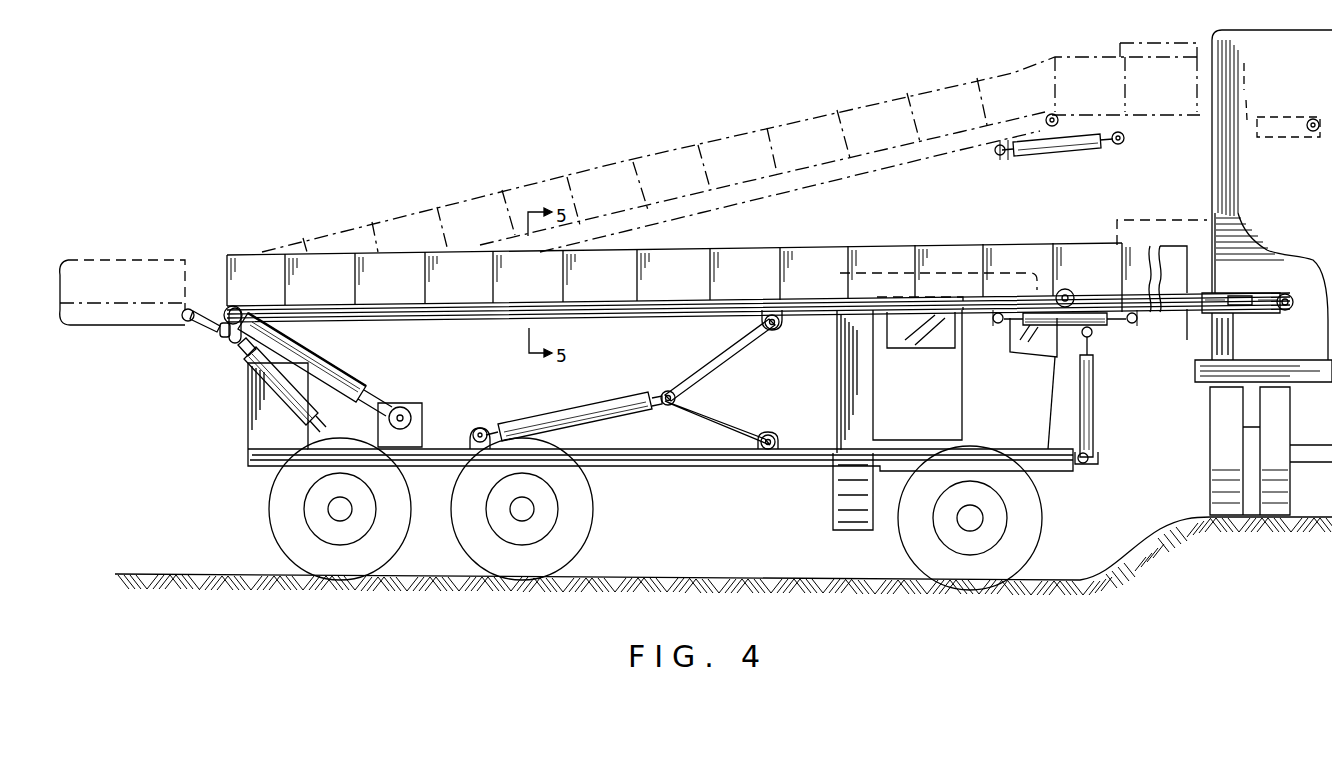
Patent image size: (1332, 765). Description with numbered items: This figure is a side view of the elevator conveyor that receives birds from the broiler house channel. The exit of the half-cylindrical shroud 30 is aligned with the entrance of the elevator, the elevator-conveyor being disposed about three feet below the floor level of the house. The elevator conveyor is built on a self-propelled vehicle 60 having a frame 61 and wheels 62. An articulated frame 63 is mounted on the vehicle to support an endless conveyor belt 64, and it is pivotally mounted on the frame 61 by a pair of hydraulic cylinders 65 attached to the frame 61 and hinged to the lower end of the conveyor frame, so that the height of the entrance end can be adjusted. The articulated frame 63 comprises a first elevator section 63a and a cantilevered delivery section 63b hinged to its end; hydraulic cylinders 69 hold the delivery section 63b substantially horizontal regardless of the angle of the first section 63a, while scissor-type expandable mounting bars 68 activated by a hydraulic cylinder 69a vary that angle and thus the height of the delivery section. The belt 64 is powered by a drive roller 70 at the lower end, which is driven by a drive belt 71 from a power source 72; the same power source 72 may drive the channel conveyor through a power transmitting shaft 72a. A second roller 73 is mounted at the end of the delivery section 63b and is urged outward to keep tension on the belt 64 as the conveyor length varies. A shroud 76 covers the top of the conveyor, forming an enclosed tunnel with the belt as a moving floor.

The half-cylindrical shroud 30 is at (157, 262).
The self-propelled vehicle 60 is at (660, 420).
The frame 61 is at (765, 466).
The wheels 62 is at (399, 549).
The articulated frame 63 is at (758, 288).
The first elevator section 63a is at (418, 322).
The cantilevered delivery section 63b is at (1186, 320).
The endless conveyor belt 64 is at (1092, 330).
The hydraulic cylinders 65 is at (253, 382).
The scissor-type expandable mounting bars 68 is at (740, 350).
The hydraulic cylinders 69 is at (1078, 156).
The hydraulic cylinder 69a is at (604, 408).
The drive roller 70 is at (228, 336).
The drive belt 71 is at (358, 373).
The power source 72 is at (425, 406).
The power transmitting shaft 72a is at (208, 328).
The second roller 73 is at (1307, 297).
The shroud 76 is at (645, 160).